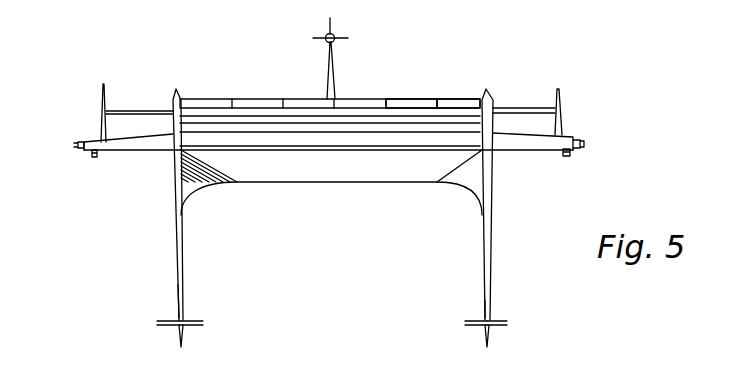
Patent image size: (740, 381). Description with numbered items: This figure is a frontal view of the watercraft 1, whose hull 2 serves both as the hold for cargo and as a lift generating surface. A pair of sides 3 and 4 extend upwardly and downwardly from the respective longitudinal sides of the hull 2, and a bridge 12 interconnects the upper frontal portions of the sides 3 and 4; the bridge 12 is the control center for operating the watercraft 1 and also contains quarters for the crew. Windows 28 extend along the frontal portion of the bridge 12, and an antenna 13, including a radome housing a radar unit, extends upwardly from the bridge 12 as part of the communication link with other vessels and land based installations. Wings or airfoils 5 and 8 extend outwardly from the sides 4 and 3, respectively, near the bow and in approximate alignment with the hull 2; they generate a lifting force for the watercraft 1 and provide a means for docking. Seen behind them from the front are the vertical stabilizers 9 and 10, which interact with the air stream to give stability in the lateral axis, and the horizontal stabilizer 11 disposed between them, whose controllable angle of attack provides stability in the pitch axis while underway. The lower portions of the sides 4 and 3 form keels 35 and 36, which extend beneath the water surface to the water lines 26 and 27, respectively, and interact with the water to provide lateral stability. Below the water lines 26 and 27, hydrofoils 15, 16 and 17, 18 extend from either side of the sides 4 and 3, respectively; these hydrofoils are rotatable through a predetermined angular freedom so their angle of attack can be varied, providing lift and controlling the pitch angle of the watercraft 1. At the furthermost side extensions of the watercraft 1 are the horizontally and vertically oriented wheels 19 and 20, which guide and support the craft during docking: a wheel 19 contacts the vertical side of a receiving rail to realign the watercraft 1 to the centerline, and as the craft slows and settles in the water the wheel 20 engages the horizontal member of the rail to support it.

The watercraft 1 is at (215, 97).
The hull 2 is at (368, 146).
The side 3 is at (172, 250).
The side 4 is at (492, 268).
The wing or airfoil 5 is at (547, 152).
The wing or airfoil 8 is at (130, 150).
The vertical stabilizer 9 is at (562, 115).
The vertical stabilizer 10 is at (100, 98).
The horizontal stabilizer 11 is at (127, 108).
The bridge 12 is at (420, 97).
The antenna 13 is at (336, 37).
The hydrofoil 15 is at (500, 325).
The hydrofoil 16 is at (468, 325).
The hydrofoil 17 is at (205, 325).
The hydrofoil 18 is at (165, 325).
The wheel 19 is at (584, 144).
The wheel 20 is at (94, 158).
The water line 26 is at (493, 302).
The water line 27 is at (175, 288).
The windows 28 is at (459, 105).
The keel 35 is at (487, 348).
The keel 36 is at (182, 348).